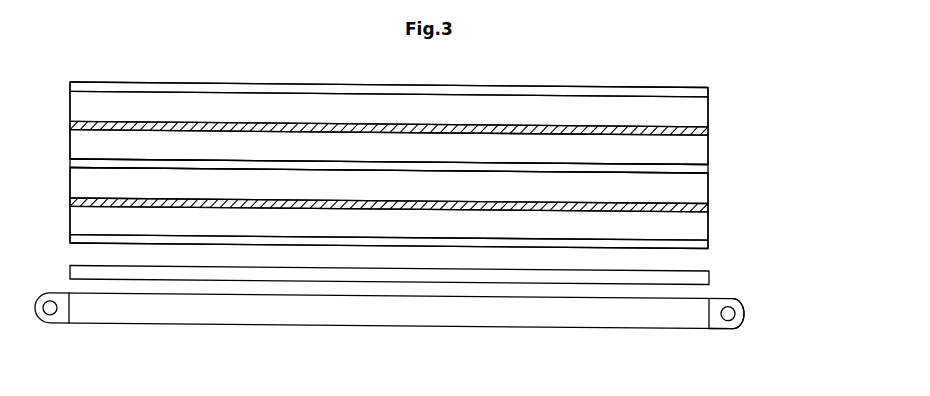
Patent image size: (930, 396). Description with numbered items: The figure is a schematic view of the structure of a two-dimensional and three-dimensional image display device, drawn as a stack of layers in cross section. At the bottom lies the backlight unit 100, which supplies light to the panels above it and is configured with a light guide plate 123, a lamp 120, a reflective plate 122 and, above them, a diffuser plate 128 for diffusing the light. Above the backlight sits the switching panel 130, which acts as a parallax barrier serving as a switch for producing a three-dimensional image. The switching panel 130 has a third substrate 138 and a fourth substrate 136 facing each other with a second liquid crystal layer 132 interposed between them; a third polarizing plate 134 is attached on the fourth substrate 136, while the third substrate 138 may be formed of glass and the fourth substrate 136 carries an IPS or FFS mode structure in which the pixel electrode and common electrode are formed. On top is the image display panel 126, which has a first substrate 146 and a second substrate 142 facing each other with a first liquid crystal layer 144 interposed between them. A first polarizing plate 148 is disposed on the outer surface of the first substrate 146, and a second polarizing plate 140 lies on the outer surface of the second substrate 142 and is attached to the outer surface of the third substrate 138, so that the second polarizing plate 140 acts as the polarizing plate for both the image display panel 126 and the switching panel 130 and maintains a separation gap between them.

The backlight unit 100 is at (803, 268).
The lamp 120 is at (735, 313).
The reflective plate 122 is at (740, 326).
The light guide plate 123 is at (711, 321).
The image display panel 126 is at (69, 83).
The diffuser plate 128 is at (710, 278).
The switching panel 130 is at (69, 167).
The second liquid crystal layer 132 is at (710, 208).
The third polarizing plate 134 is at (710, 244).
The fourth substrate 136 is at (710, 226).
The third substrate 138 is at (710, 188).
The second polarizing plate 140 is at (710, 169).
The second substrate 142 is at (710, 150).
The first liquid crystal layer 144 is at (710, 131).
The first substrate 146 is at (710, 112).
The first polarizing plate 148 is at (710, 92).